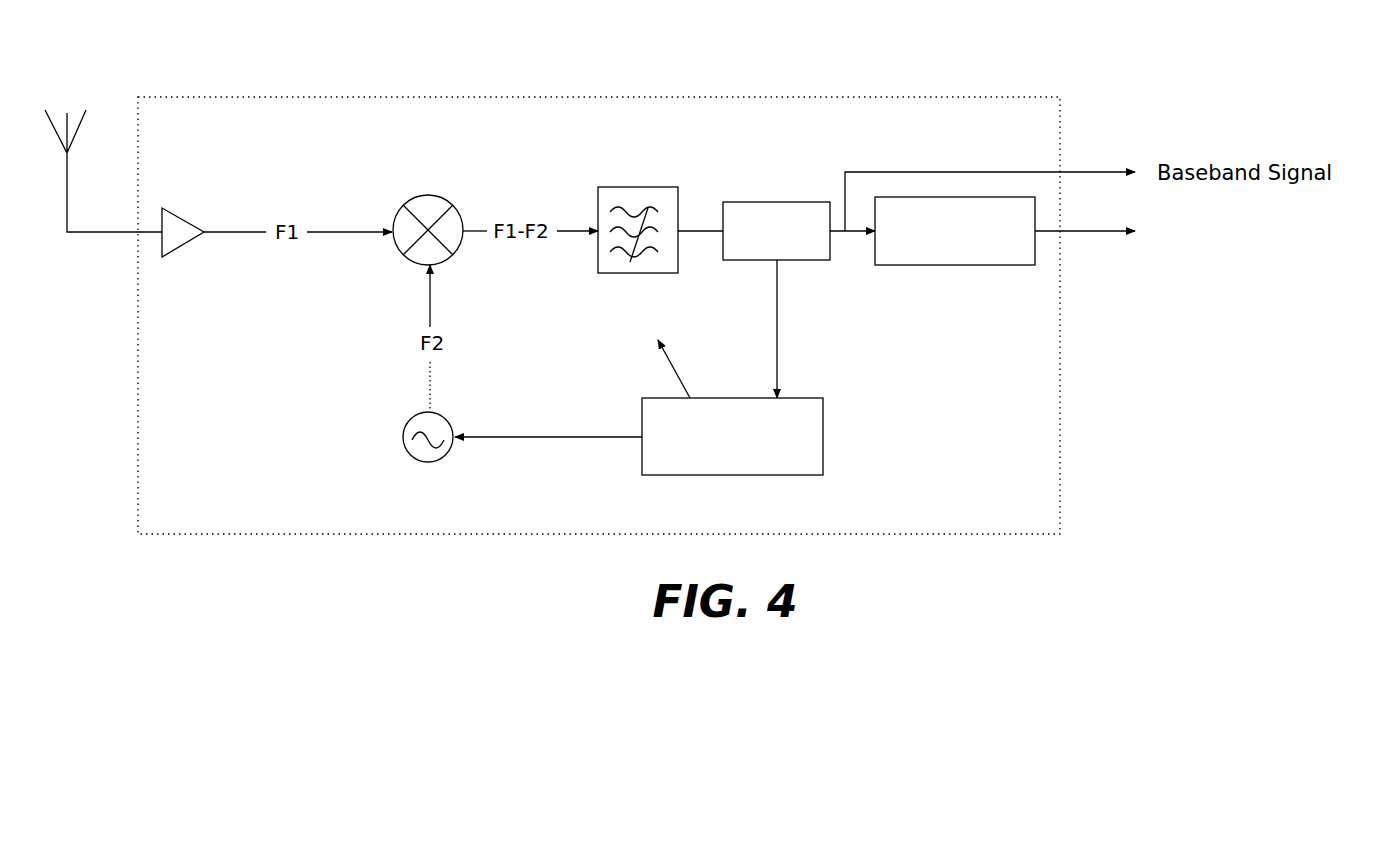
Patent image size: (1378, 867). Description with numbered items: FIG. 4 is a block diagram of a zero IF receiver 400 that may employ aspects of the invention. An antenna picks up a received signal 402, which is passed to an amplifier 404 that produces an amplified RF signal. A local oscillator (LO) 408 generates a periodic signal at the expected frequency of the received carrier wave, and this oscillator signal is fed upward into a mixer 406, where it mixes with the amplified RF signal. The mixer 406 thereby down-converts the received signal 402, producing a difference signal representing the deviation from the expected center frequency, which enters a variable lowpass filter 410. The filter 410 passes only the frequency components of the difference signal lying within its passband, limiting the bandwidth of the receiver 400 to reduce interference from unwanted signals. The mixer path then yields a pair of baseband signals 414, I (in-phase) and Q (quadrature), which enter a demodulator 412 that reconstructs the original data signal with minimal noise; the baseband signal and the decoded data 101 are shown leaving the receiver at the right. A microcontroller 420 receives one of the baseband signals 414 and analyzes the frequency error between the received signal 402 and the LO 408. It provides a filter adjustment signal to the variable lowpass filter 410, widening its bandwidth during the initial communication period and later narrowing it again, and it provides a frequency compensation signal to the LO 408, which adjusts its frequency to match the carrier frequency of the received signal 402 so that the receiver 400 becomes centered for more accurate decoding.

The zero IF receiver 400 is at (599, 284).
The received signal 402 is at (105, 133).
The amplifier 404 is at (205, 259).
The mixer 406 is at (428, 201).
The local oscillator (LO) 408 is at (441, 465).
The variable lowpass filter 410 is at (641, 292).
The demodulator 412 is at (1005, 231).
The baseband signals 414 is at (908, 267).
The microcontroller 420 is at (639, 436).
The decoded data 101 is at (1255, 231).